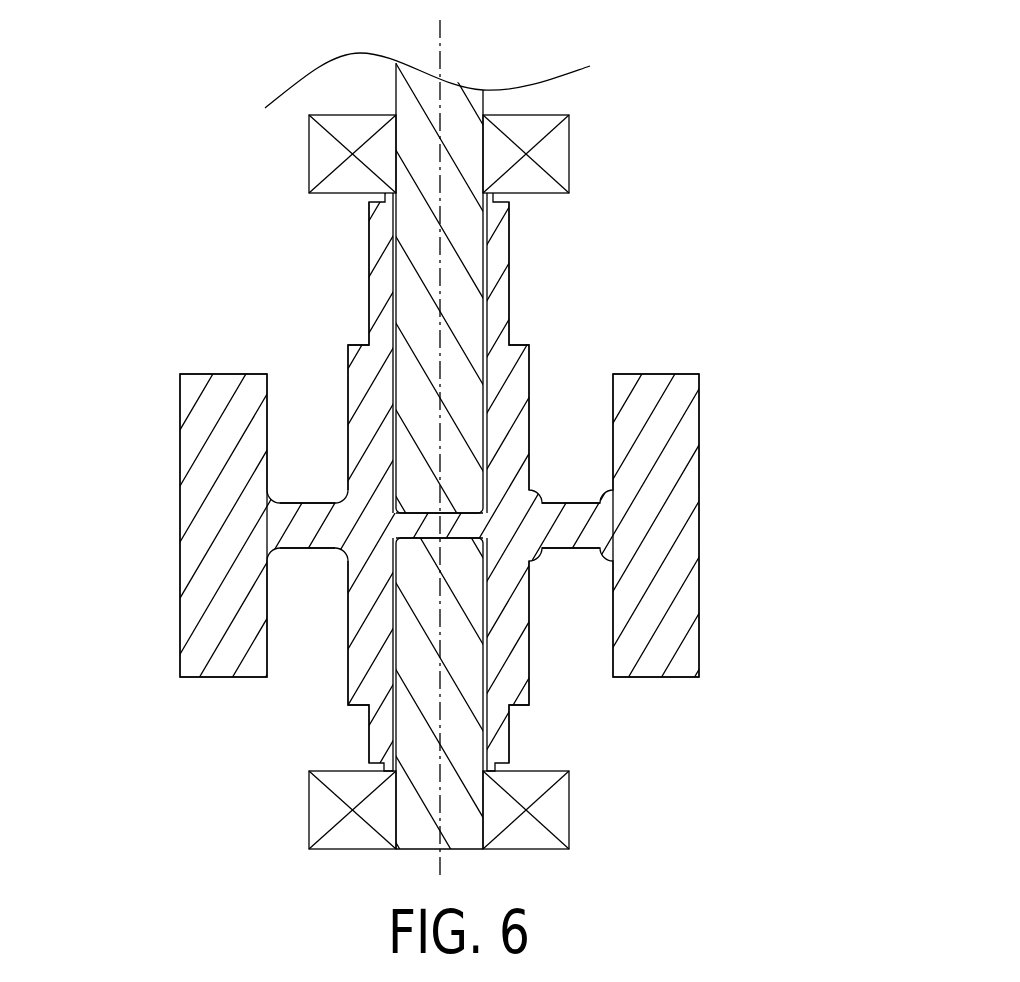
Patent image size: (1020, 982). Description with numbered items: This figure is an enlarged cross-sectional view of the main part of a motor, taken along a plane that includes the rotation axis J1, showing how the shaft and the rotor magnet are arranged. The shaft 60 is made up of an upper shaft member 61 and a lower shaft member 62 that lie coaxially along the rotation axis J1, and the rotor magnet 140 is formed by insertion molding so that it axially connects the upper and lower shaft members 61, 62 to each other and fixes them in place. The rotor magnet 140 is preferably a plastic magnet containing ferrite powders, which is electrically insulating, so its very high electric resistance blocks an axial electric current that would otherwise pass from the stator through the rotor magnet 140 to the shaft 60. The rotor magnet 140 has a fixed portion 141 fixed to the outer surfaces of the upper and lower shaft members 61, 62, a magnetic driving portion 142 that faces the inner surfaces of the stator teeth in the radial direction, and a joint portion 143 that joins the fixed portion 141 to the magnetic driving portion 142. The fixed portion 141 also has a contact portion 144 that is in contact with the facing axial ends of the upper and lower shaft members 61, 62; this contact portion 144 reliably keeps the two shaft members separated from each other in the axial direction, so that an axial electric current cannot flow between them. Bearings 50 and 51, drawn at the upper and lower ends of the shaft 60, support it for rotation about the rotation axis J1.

The upper bearing 50 is at (318, 160).
The lower bearing 51 is at (318, 813).
The shaft 60 is at (461, 463).
The upper shaft member 61 is at (465, 237).
The lower shaft member 62 is at (460, 815).
The rotor magnet 140 is at (510, 493).
The fixed portion 141 is at (525, 650).
The magnetic driving portion 142 is at (670, 546).
The joint portion 143 is at (577, 522).
The contact portion 144 is at (440, 528).
The rotation axis J1 is at (440, 38).